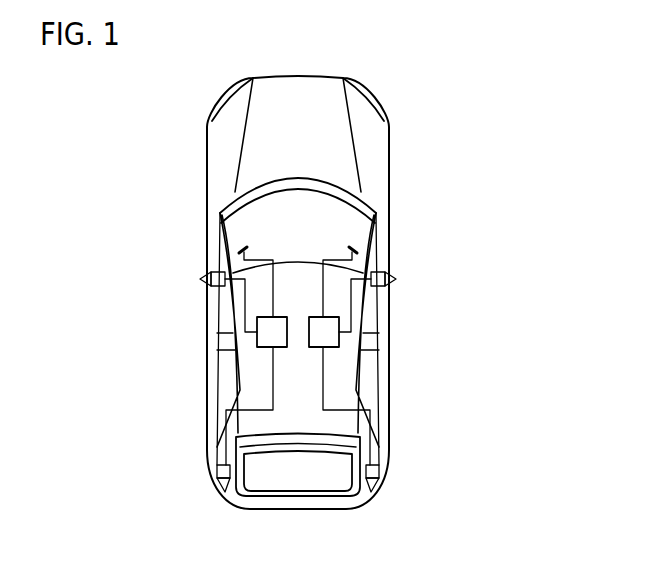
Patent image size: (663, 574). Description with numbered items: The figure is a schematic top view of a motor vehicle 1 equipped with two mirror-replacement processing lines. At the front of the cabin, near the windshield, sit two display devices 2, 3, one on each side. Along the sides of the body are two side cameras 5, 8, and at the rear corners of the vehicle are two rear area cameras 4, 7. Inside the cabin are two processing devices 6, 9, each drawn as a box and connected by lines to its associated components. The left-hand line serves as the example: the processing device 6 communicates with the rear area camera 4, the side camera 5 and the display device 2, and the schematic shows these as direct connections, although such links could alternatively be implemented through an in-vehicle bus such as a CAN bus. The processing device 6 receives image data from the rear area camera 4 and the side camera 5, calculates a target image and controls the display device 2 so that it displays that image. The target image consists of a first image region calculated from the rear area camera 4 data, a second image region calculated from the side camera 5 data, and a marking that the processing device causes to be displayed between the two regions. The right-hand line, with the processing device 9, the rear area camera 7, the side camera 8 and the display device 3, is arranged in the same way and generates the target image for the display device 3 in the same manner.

The motor vehicle 1 is at (442, 121).
The display device 2 is at (243, 250).
The display device 3 is at (353, 250).
The rear area camera 4 is at (222, 470).
The side camera 5 is at (200, 279).
The processing device 6 is at (262, 348).
The rear area camera 7 is at (378, 476).
The side camera 8 is at (396, 279).
The processing device 9 is at (336, 348).